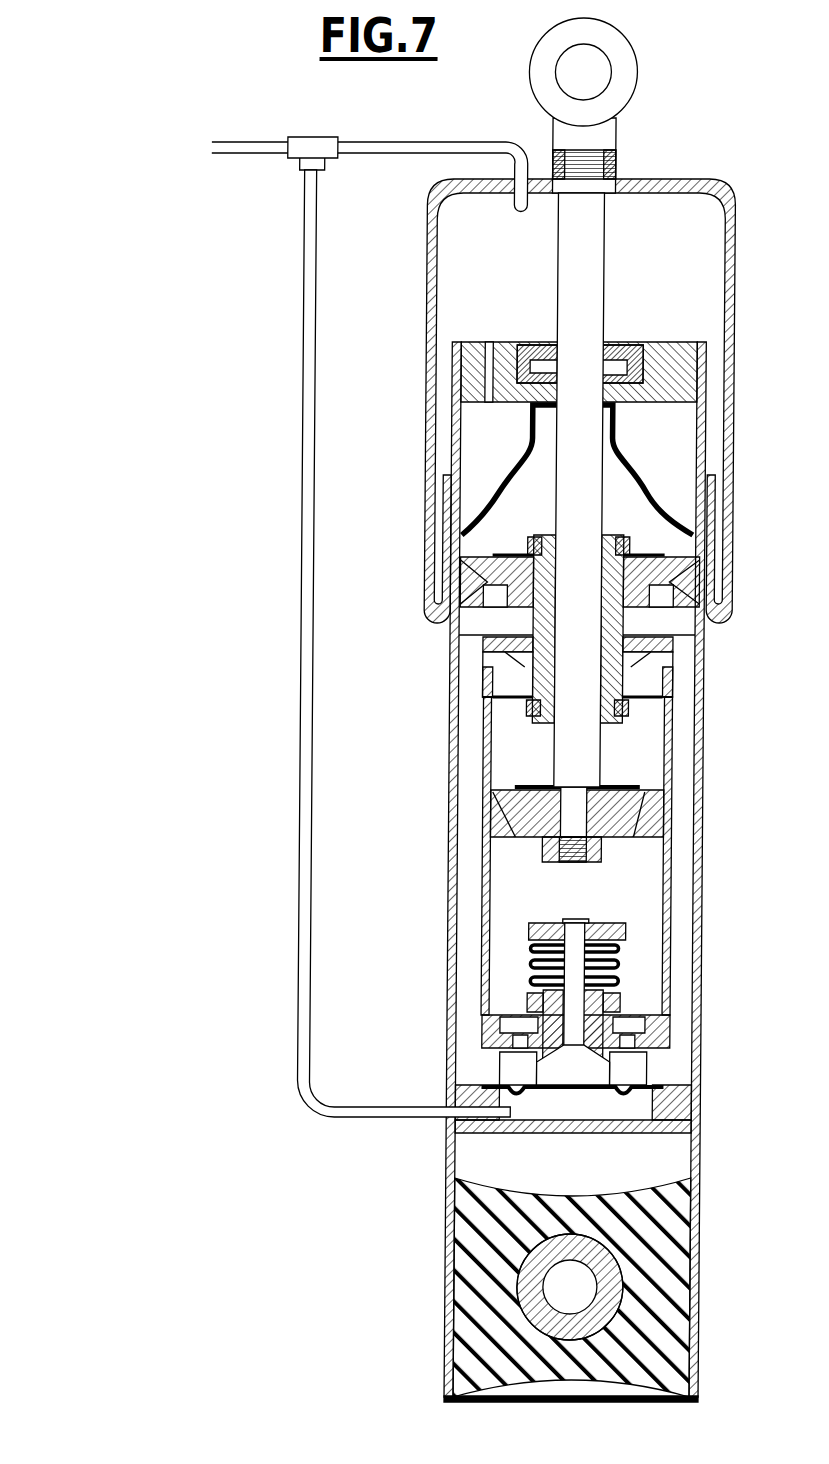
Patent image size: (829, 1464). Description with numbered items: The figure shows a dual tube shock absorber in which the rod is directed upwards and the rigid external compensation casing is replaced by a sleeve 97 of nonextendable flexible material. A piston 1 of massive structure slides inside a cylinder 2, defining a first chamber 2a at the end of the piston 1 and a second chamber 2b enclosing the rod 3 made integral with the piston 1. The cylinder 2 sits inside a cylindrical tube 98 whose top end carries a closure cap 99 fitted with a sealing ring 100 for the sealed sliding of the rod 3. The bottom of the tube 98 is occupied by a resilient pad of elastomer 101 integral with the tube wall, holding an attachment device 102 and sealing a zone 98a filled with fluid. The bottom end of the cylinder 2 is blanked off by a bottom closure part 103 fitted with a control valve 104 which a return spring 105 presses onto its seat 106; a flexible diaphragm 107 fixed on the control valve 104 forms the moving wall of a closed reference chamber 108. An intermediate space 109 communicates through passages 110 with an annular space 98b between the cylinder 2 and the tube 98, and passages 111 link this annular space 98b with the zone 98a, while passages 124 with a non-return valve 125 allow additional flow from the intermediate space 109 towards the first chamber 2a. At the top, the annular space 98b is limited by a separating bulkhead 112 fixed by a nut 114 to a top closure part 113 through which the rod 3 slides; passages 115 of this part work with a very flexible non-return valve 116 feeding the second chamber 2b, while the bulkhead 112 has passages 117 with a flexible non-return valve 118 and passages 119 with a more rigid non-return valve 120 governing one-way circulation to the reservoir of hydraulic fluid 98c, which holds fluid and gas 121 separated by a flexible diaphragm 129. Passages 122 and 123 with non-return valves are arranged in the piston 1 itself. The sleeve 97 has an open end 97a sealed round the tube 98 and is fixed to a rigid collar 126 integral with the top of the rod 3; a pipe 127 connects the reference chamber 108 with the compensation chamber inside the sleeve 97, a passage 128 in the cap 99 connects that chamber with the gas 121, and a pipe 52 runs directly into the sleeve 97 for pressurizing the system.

The piston 1 is at (550, 813).
The cylinder 2 is at (496, 892).
The first chamber 2a is at (636, 878).
The second chamber 2b is at (530, 752).
The rod 3 is at (586, 245).
The pipe 52 is at (265, 146).
The sleeve 97 is at (738, 303).
The open end 97a is at (724, 482).
The cylindrical tube 98 is at (716, 442).
The zone filled with fluid 98a is at (478, 1160).
The annular space 98b is at (476, 865).
The reservoir of hydraulic fluid 98c is at (500, 522).
The closure cap 99 is at (678, 375).
The sealing ring 100 is at (537, 345).
The resilient pad of elastomer 101 is at (510, 1290).
The attachment device 102 is at (613, 1277).
The bottom closure part 103 is at (495, 1038).
The control valve 104 is at (581, 1052).
The return spring 105 is at (540, 945).
The seat 106 is at (648, 1055).
The flexible diaphragm 107 is at (534, 1095).
The reference chamber 108 is at (630, 1108).
The intermediate space 109 is at (500, 1080).
The passages 110 is at (498, 1065).
The passages 111 is at (681, 1122).
The separating bulkhead 112 is at (530, 578).
The top closure part 113 is at (548, 645).
The nut 114 is at (540, 552).
The passages 115 is at (658, 657).
The non-return valve 116 is at (652, 693).
The passages 117 is at (626, 546).
The lower seal 118 is at (677, 610).
The passages 119 is at (672, 560).
The non-return valve 120 is at (695, 553).
The gas 121 is at (494, 447).
The passages 122 is at (659, 802).
The passages 123 is at (555, 840).
The passages 124 is at (635, 1022).
The non-return valve 125 is at (648, 1010).
The rigid collar 126 is at (704, 180).
The pipe 127 is at (306, 513).
The passage 128 is at (490, 368).
The flexible diaphragm 129 is at (530, 430).